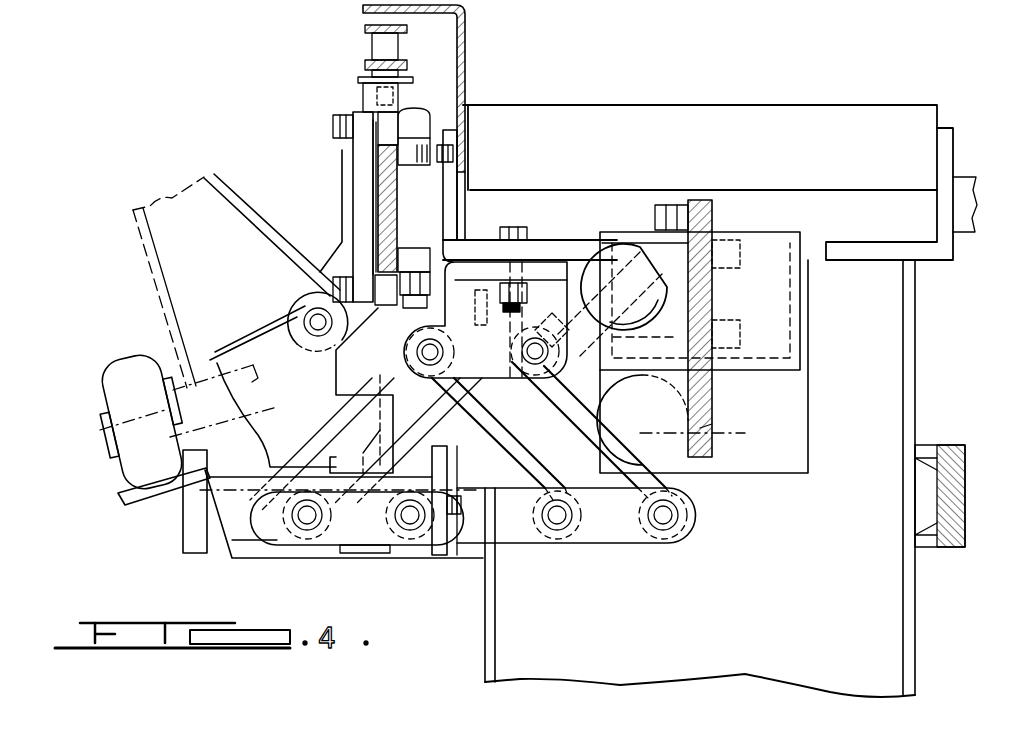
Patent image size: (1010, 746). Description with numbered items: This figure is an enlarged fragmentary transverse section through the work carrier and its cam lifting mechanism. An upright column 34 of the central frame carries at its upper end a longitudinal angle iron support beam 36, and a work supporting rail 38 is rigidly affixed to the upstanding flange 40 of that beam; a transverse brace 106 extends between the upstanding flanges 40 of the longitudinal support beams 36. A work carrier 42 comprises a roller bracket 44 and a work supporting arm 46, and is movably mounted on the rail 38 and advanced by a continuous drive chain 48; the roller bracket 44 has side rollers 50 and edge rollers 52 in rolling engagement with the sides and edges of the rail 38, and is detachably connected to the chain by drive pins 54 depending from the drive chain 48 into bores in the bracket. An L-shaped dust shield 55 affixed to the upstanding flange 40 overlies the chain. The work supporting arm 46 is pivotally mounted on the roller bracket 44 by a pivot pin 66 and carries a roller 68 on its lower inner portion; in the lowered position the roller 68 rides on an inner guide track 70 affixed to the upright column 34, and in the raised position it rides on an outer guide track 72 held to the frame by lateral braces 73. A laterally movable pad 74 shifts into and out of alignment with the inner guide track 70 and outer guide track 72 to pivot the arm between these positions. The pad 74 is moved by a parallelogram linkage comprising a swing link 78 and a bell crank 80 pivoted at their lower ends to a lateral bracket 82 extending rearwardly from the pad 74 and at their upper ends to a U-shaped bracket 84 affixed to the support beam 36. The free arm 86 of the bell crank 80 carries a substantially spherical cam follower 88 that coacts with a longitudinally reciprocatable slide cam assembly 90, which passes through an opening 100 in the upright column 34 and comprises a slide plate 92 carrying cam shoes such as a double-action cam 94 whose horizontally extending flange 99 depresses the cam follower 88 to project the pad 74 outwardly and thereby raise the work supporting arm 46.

The upright column 34 is at (882, 380).
The longitudinal angle iron support beam 36 is at (945, 135).
The work supporting rail 38 is at (405, 208).
The upstanding flange 40 is at (457, 190).
The work carrier 42 is at (338, 182).
The roller bracket 44 is at (362, 200).
The work supporting arm 46 is at (176, 302).
The drive chain 48 is at (382, 45).
The side roller 50 is at (440, 152).
The edge roller 52 is at (387, 117).
The drive pin 54 is at (352, 88).
The L-shaped dust shield 55 is at (465, 52).
The pivot pin 66 is at (316, 323).
The cam follower or roller 68 is at (115, 382).
The inner guide track 70 is at (958, 447).
The outer guide track 72 is at (118, 495).
The lateral brace 73 is at (240, 560).
The guide track section or pad 74 is at (183, 553).
The swing link 78 is at (402, 415).
The bell crank 80 is at (532, 437).
The lateral bracket 82 is at (598, 545).
The U-shaped bracket 84 is at (540, 290).
The free arm 86 is at (600, 342).
The spherical cam follower 88 is at (614, 250).
The slide cam assembly 90 is at (716, 386).
The slide plate 92 is at (700, 426).
The double-action cam 94 is at (785, 240).
The flange 99 is at (655, 232).
The opening 100 is at (812, 446).
The transverse brace 106 is at (738, 108).